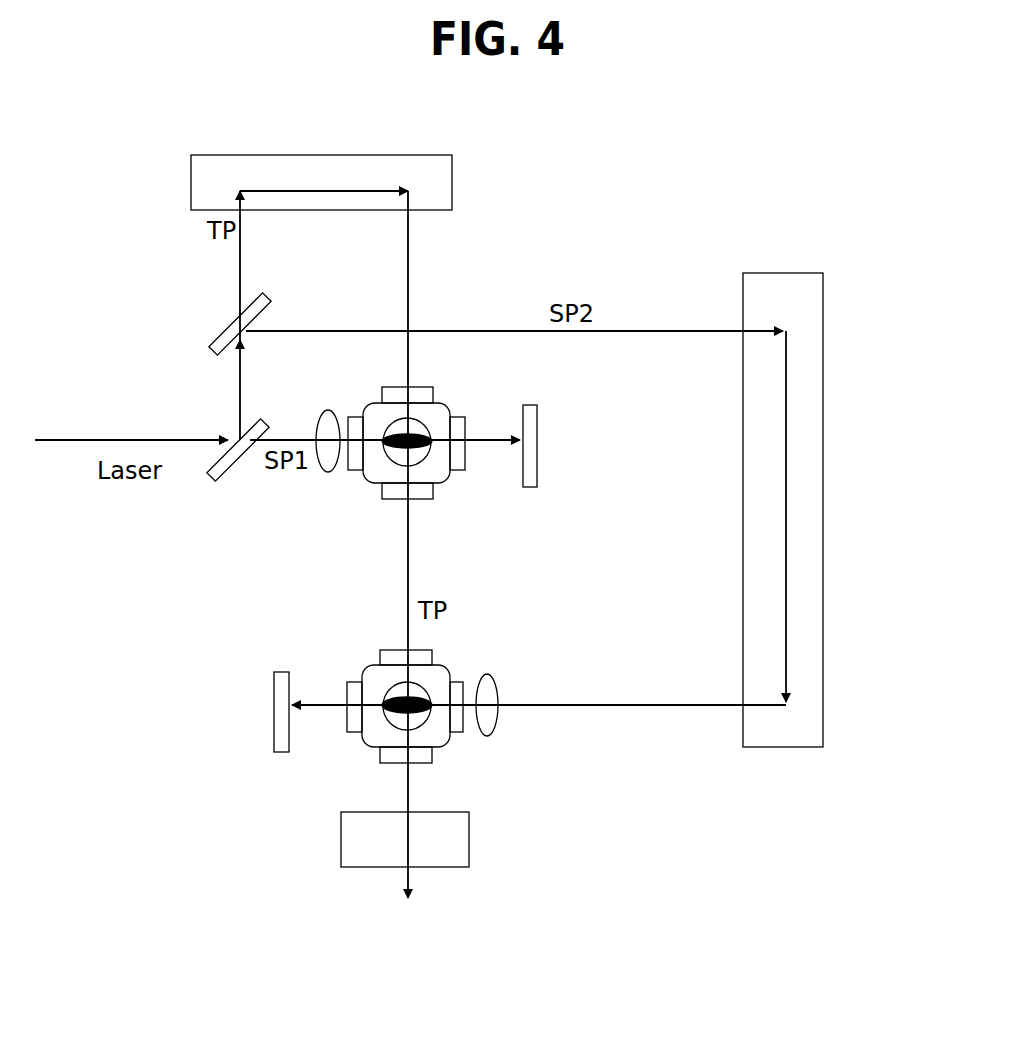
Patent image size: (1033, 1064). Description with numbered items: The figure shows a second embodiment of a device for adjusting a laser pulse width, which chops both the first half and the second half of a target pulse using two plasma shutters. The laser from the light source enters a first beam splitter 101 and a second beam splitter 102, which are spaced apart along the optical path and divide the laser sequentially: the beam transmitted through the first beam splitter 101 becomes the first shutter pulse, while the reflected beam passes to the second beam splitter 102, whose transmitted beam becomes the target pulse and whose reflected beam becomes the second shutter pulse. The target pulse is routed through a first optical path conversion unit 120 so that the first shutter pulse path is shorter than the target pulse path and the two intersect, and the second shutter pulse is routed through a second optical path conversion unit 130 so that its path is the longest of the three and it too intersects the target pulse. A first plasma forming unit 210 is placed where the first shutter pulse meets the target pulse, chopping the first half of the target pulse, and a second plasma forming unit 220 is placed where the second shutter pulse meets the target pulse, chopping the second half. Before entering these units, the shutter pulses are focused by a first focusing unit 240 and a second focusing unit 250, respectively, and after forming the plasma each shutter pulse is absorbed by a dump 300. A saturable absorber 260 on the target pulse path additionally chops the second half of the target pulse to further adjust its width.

The first beam splitter 101 is at (208, 478).
The second beam splitter 102 is at (205, 340).
The first optical path conversion unit 120 is at (452, 190).
The second optical path conversion unit 130 is at (824, 355).
The first plasma forming unit 210 is at (442, 483).
The second plasma forming unit 220 is at (450, 672).
The first focusing unit 240 is at (326, 472).
The second focusing unit 250 is at (497, 720).
The saturable absorber 260 is at (469, 838).
The dump 300 is at (533, 487).